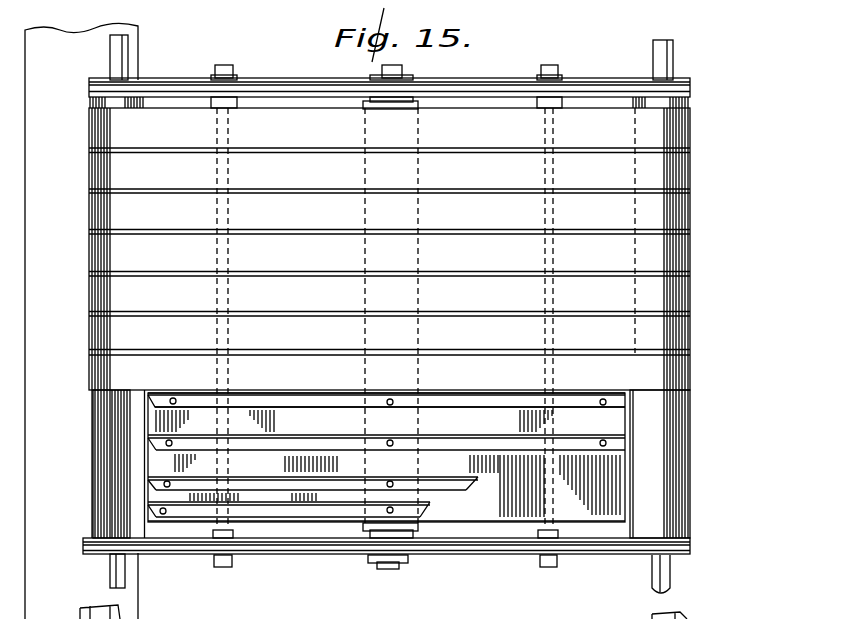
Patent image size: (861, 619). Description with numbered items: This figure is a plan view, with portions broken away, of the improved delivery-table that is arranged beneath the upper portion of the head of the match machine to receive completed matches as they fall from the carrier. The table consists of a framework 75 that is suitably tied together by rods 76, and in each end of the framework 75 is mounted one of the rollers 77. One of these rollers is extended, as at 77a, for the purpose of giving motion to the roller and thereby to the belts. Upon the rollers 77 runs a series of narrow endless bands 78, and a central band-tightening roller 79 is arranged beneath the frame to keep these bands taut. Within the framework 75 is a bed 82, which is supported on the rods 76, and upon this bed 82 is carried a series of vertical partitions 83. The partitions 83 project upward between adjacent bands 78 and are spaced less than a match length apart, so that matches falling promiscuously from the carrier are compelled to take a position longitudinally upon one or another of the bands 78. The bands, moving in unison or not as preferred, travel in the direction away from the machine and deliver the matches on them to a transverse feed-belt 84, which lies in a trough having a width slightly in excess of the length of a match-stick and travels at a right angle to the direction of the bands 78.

The framework 75 is at (500, 85).
The rods 76 is at (224, 560).
The rollers 77 is at (676, 458).
The extended roller end 77a is at (671, 576).
The narrow endless bands 78 is at (692, 128).
The central band-tightening roller 79 is at (387, 535).
The bed 82 is at (478, 478).
The vertical partitions 83 is at (578, 445).
The transverse feed-belt 84 is at (81, 321).